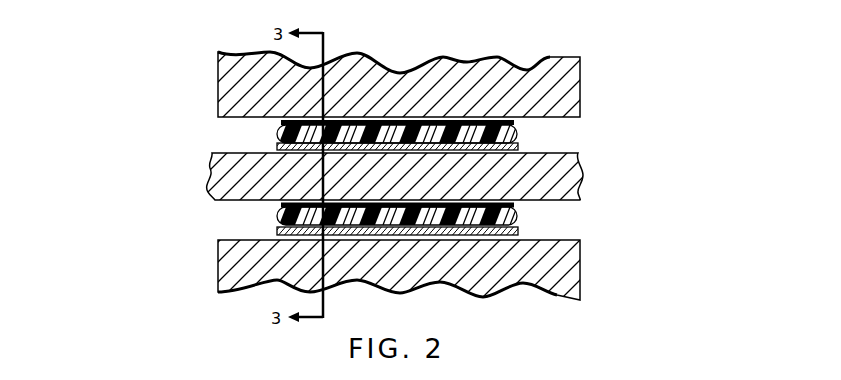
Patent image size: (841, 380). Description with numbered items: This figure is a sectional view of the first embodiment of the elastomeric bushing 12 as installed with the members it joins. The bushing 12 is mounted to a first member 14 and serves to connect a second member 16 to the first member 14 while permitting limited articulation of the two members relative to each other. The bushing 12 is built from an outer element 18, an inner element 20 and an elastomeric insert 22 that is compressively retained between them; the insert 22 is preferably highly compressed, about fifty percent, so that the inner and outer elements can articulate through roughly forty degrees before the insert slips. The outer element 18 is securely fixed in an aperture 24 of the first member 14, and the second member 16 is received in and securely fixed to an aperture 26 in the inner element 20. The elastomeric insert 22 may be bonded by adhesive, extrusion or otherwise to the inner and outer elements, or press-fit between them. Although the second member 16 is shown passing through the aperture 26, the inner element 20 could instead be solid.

The elastomeric bushing 12 is at (618, 100).
The first member 14 is at (557, 85).
The second member 16 is at (567, 201).
The outer element 18 is at (280, 232).
The inner element 20 is at (276, 205).
The elastomeric insert 22 is at (517, 131).
The aperture 24 is at (565, 241).
The aperture 26 is at (520, 149).